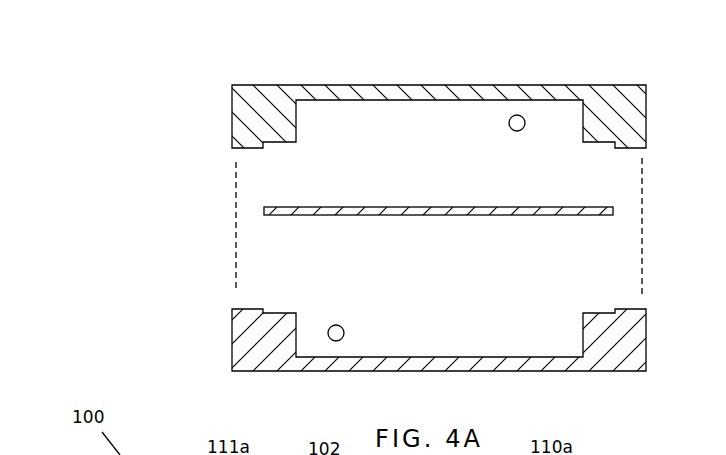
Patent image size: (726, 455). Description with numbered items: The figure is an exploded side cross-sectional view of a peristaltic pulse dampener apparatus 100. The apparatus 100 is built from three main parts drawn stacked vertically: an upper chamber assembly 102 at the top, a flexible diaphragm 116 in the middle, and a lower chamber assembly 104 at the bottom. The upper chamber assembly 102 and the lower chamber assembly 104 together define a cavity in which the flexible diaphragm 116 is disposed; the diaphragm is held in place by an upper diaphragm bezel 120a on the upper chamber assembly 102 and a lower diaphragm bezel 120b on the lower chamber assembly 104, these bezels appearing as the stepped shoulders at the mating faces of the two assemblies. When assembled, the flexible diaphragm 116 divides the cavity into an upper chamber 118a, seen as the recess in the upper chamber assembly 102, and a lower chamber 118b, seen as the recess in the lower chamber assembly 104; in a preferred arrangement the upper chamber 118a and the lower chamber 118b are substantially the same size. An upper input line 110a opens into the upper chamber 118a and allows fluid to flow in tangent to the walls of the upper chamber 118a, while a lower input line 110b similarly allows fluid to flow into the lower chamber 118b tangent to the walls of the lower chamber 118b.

The peristaltic pulse dampener apparatus 100 is at (148, 120).
The upper chamber assembly 102 is at (486, 85).
The lower chamber assembly 104 is at (617, 371).
The upper input line 110a is at (520, 114).
The lower input line 110b is at (343, 326).
The flexible diaphragm 116 is at (337, 216).
The upper chamber 118a is at (338, 115).
The lower chamber 118b is at (428, 330).
The upper diaphragm bezel 120a is at (607, 146).
The lower diaphragm bezel 120b is at (600, 312).